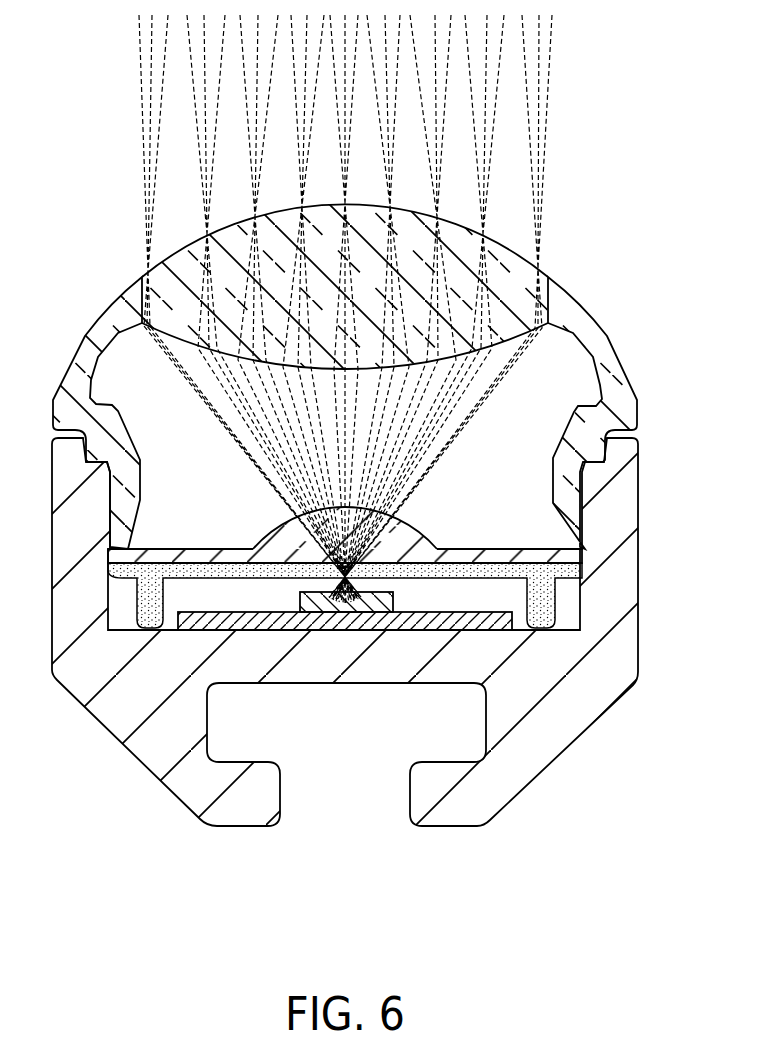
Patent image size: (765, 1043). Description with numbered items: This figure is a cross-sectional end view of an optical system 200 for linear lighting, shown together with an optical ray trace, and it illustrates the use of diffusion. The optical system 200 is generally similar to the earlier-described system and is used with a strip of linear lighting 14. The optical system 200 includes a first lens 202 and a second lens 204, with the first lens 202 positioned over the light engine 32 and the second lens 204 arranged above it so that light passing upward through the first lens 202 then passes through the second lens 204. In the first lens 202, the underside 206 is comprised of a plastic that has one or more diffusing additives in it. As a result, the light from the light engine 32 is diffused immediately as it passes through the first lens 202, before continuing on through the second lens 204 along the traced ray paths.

The optical system 200 is at (97, 286).
The second lens 204 is at (567, 294).
The first lens 202 is at (210, 546).
The strip of linear lighting 14 is at (489, 611).
The underside 206 is at (242, 583).
The light engine 32 is at (393, 602).